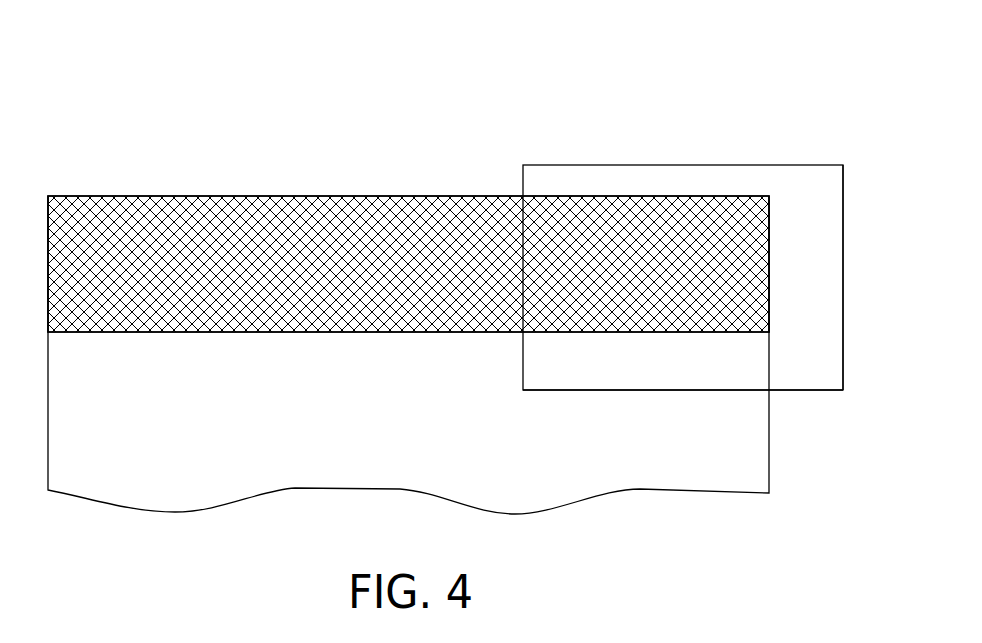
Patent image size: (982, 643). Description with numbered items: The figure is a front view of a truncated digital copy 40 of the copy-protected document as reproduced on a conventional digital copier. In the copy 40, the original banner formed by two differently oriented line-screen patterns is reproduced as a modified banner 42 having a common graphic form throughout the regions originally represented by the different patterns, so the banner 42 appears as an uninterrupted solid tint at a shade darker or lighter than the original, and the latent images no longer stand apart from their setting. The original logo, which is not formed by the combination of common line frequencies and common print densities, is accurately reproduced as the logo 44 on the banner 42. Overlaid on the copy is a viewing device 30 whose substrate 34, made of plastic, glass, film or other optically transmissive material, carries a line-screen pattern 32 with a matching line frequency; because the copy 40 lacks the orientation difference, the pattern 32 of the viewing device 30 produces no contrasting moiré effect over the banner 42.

The viewing device 30 is at (733, 165).
The line-screen pattern 32 is at (805, 353).
The substrate 34 is at (843, 281).
The digital copy 40 is at (190, 194).
The modified banner 42 is at (230, 332).
The logo 44 is at (375, 224).